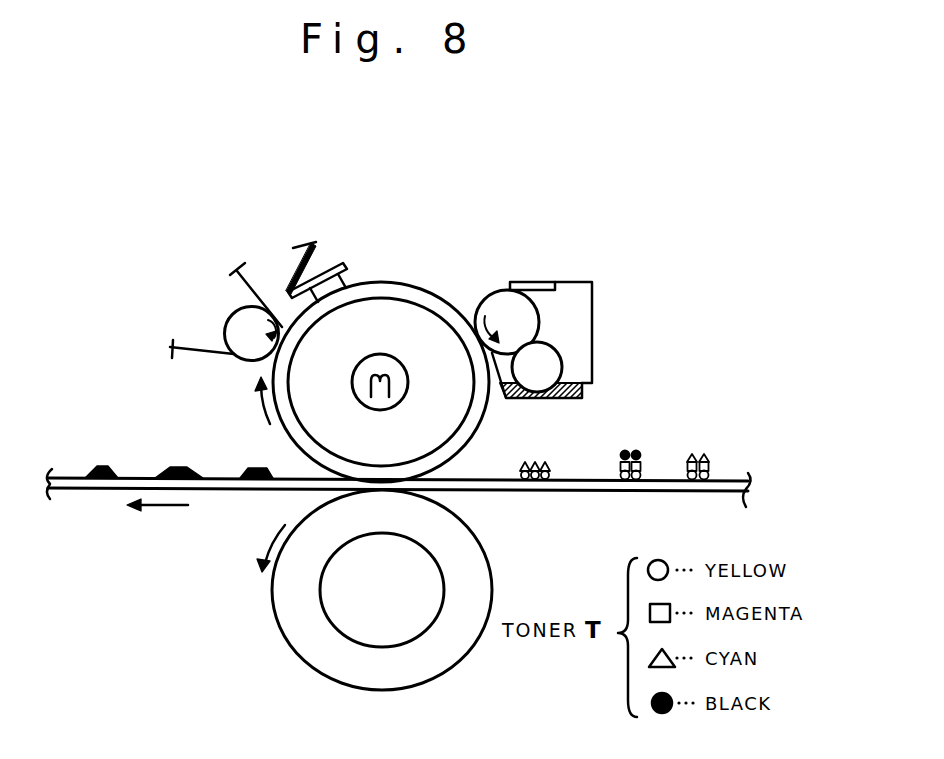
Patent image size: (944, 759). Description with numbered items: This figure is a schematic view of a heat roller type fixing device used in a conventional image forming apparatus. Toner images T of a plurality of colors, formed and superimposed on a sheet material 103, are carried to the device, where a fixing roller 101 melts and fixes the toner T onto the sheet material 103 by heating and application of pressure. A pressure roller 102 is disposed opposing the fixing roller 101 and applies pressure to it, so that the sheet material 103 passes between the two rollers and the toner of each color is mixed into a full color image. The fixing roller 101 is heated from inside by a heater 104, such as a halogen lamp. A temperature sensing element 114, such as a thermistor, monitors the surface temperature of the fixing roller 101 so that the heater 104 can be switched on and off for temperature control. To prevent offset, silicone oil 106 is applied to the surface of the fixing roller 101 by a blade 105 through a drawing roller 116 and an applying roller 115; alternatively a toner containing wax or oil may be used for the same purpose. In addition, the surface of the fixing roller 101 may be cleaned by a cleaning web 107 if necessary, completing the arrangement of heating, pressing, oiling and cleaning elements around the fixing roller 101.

The fixing roller 101 is at (432, 290).
The pressure roller 102 is at (312, 648).
The sheet material 103 is at (72, 483).
The heater 104 is at (393, 388).
The blade 105 is at (553, 285).
The silicone oil 106 is at (592, 389).
The cleaning web 107 is at (242, 347).
The temperature sensing element 114 is at (345, 280).
The applying roller 115 is at (532, 320).
The drawing roller 116 is at (548, 363).
The toner T is at (103, 466).